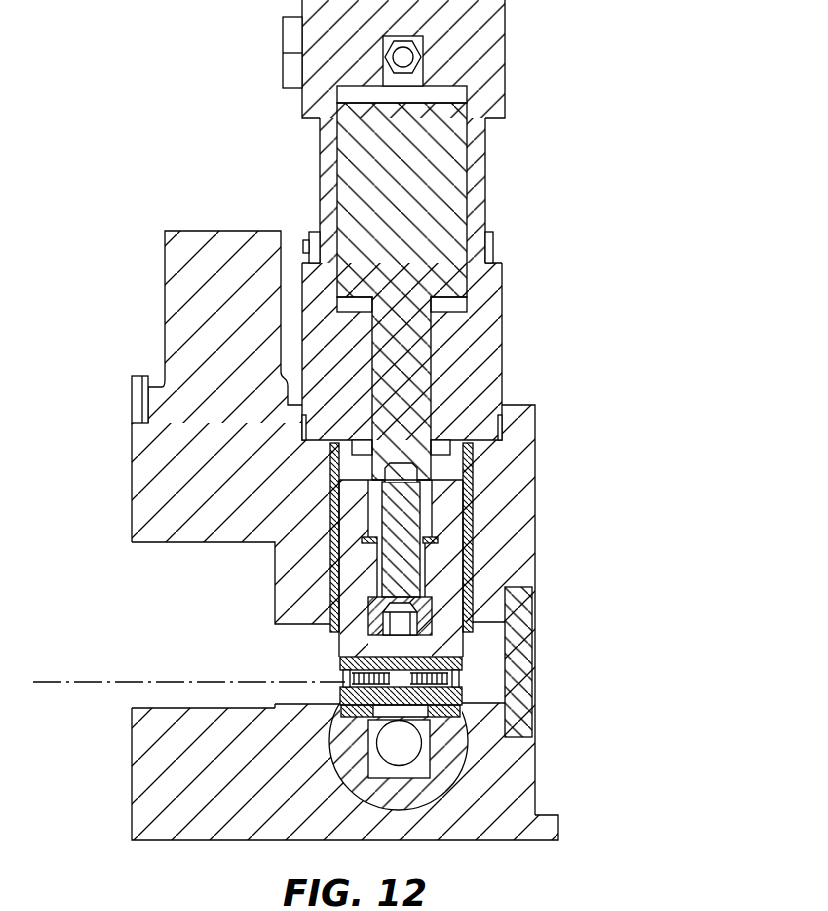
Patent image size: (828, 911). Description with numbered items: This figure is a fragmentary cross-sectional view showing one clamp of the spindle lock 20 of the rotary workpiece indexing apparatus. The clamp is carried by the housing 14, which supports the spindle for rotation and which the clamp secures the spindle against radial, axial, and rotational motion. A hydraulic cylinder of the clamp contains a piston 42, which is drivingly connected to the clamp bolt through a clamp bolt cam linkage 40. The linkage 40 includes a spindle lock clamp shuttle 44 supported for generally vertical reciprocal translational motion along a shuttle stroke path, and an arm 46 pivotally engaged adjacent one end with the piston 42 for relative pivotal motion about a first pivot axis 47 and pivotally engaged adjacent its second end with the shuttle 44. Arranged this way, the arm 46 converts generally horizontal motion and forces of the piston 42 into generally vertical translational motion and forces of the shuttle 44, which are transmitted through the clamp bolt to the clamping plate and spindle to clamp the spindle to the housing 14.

The housing 14 is at (506, 494).
The spindle lock 20 is at (607, 610).
The clamp bolt cam linkage 40 is at (441, 570).
The piston 42 is at (447, 183).
The spindle lock clamp shuttle 44 is at (457, 755).
The arm 46 is at (412, 713).
The first pivot axis 47 is at (77, 682).